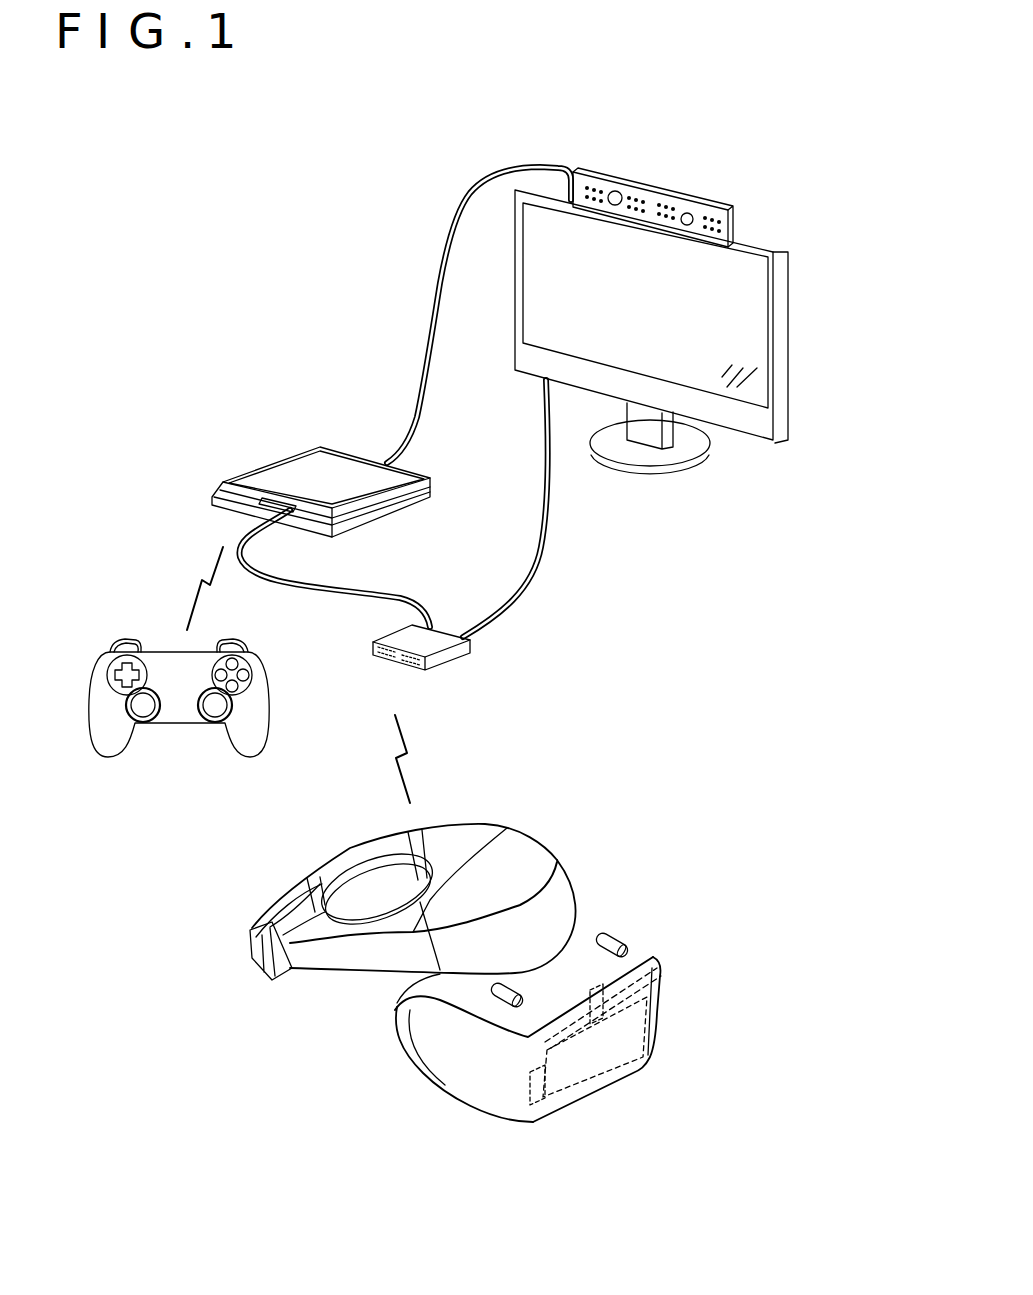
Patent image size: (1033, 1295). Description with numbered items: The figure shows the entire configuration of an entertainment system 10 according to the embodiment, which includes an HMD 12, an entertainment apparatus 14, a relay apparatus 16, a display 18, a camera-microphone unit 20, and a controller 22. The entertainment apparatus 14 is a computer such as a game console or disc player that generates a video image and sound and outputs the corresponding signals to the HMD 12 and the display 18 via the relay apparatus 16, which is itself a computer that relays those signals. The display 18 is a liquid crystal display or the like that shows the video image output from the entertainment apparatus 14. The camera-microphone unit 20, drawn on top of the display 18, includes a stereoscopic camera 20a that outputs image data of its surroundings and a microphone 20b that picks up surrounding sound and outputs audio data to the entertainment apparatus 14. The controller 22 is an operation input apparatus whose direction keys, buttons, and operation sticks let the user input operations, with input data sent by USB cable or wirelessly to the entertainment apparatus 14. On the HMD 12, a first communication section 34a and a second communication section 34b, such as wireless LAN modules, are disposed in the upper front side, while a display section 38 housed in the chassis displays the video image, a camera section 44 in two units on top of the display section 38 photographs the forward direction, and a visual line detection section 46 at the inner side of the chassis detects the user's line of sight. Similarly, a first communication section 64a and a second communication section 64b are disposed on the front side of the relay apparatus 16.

The entertainment system 10 is at (536, 1001).
The HMD 12 is at (487, 1110).
The entertainment apparatus 14 is at (275, 463).
The relay apparatus 16 is at (436, 669).
The display 18 is at (790, 345).
The camera-microphone unit 20 is at (679, 199).
The camera 20a is at (612, 207).
The microphone 20b is at (640, 187).
The controller 22 is at (270, 707).
The first communication section 34a is at (530, 1037).
The second communication section 34b is at (660, 962).
The display section 38 is at (603, 1075).
The camera section 44 is at (507, 988).
The visual line detection section 46 is at (662, 1013).
The first communication section 64a is at (388, 663).
The second communication section 64b is at (413, 665).